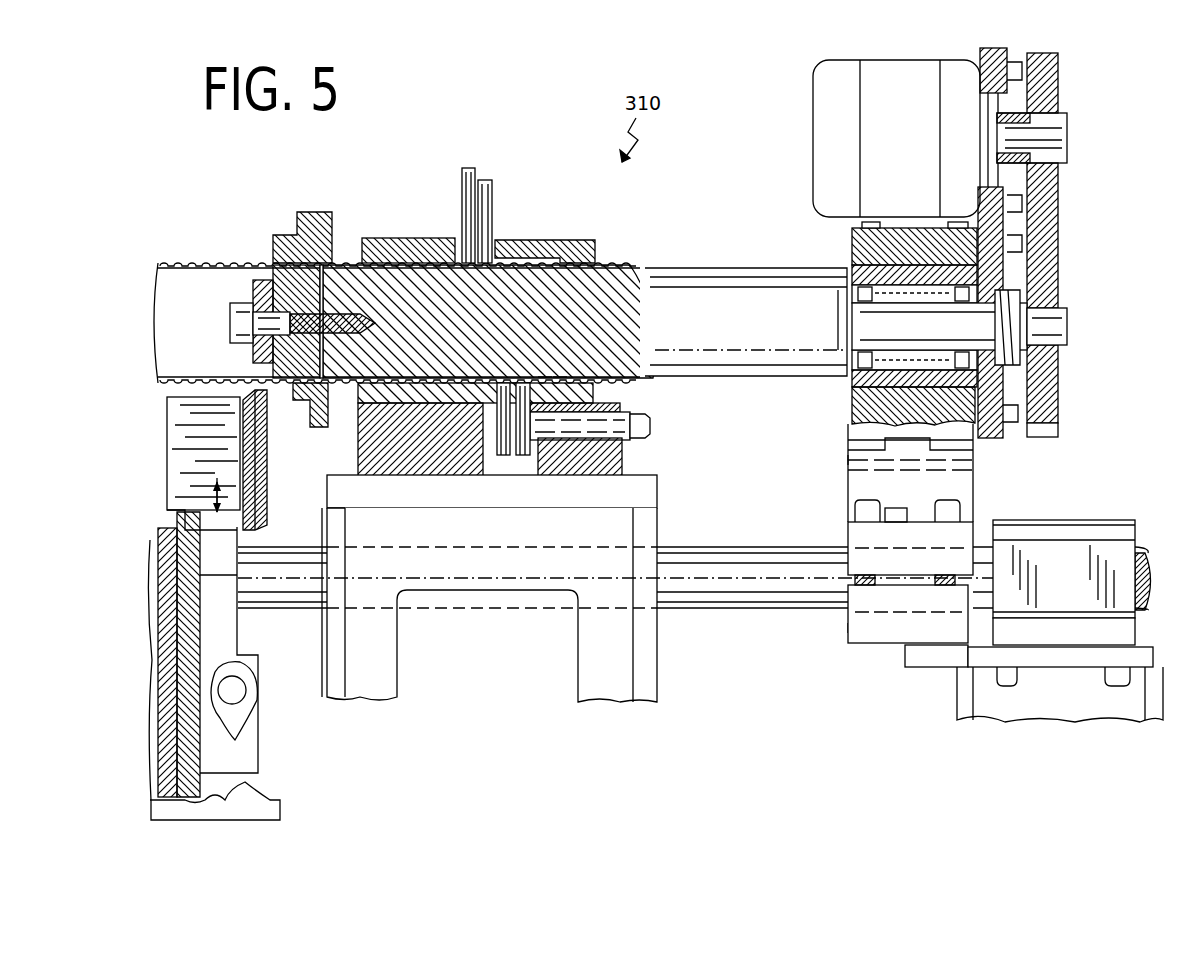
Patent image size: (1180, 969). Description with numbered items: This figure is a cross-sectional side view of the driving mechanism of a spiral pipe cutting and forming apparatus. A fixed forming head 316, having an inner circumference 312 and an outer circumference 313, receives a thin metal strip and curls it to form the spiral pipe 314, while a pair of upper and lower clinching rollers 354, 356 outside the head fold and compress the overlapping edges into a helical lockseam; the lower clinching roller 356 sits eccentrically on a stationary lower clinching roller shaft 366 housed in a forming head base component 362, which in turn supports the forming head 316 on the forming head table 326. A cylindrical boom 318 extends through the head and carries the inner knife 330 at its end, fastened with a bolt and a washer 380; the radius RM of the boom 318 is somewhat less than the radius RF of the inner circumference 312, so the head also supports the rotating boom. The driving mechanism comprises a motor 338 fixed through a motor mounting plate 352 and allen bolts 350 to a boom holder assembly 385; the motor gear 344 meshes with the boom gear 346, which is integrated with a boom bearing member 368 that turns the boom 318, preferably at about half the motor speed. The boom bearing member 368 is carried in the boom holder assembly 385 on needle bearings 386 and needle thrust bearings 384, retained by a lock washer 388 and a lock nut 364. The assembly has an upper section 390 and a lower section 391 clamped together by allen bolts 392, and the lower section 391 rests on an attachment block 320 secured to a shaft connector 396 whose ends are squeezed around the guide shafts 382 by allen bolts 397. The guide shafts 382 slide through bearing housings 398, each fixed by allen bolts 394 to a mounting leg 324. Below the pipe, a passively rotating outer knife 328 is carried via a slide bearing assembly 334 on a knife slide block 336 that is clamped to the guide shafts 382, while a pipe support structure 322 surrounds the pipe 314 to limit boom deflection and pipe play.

The inner circumference 312 is at (579, 378).
The outer circumference 313 is at (403, 236).
The spiral pipe 314 is at (240, 262).
The forming head 316 is at (583, 248).
The boom 318 is at (690, 298).
The attachment block 320 is at (848, 490).
The pipe support structure 322 is at (320, 218).
The mounting leg 324 is at (1045, 710).
The forming head table 326 is at (440, 575).
The outer knife 328 is at (262, 465).
The inner knife 330 is at (290, 277).
The slide bearing assembly 334 is at (170, 637).
The knife slide block 336 is at (152, 745).
The motor 338 is at (823, 125).
The motor gear 344 is at (1060, 178).
The boom gear 346 is at (1040, 400).
The allen bolts 350 is at (1012, 75).
The motor mounting plate 352 is at (1003, 55).
The upper clinching roller 354 is at (490, 188).
The lower clinching roller 356 is at (510, 457).
The forming head base component 362 is at (400, 452).
The lock nut 364 is at (1040, 352).
The lower clinching roller shaft 366 is at (642, 425).
The boom bearing member 368 is at (870, 320).
The washer 380 is at (265, 273).
The guide shafts 382 is at (733, 572).
The needle thrust bearings 384 is at (862, 370).
The boom holder assembly 385 is at (846, 460).
The needle bearings 386 is at (862, 407).
The lock washer 388 is at (1015, 286).
The upper section 390 is at (870, 252).
The lower section 391 is at (862, 440).
The allen bolts 392 is at (870, 226).
The allen bolts 394 is at (1005, 688).
The shaft connector 396 is at (875, 638).
The allen bolts 397 is at (925, 505).
The bearing housings 398 is at (1102, 540).
The radius of the boom RM is at (545, 378).
The radius of the forming head inner circumference RF is at (560, 378).